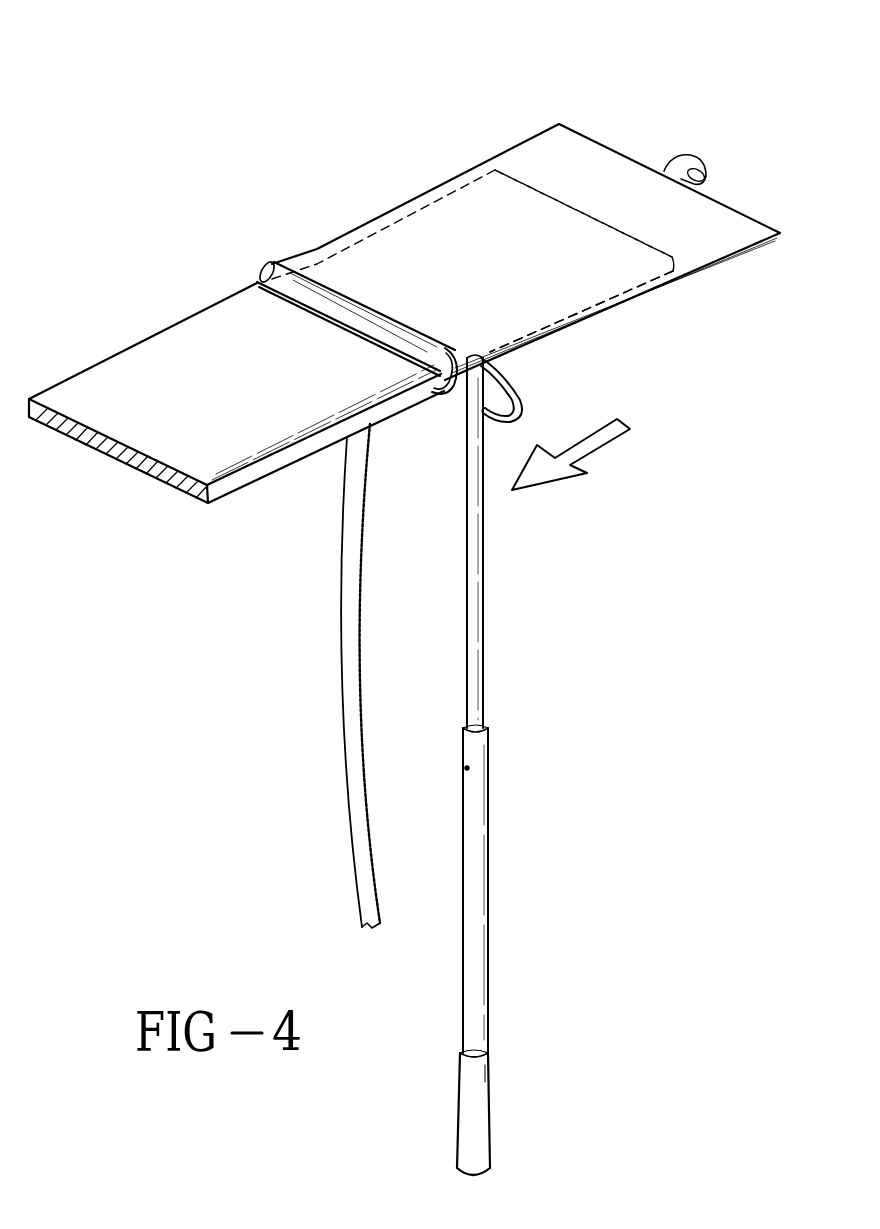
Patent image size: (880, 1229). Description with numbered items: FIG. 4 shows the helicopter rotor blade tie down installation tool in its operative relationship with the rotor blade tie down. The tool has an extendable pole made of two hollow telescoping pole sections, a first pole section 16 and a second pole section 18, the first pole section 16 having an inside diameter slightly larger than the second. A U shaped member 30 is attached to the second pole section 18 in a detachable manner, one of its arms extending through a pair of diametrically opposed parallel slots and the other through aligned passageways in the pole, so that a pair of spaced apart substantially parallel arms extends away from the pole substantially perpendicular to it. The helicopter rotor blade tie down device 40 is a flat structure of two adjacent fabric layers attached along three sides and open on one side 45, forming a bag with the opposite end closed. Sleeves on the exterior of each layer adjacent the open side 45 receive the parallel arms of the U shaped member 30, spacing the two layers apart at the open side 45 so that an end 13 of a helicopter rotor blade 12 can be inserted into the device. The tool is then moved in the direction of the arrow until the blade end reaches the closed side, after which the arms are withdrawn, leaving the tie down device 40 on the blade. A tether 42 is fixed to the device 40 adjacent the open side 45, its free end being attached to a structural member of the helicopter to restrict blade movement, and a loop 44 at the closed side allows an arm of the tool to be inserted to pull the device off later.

The helicopter rotor blade 12 is at (112, 378).
The end of helicopter rotor blade 13 is at (542, 197).
The first pole section 16 is at (487, 870).
The second pole section 18 is at (483, 590).
The U shaped member 30 is at (518, 402).
The helicopter rotor blade tie down device 40 is at (425, 177).
The tether 42 is at (337, 622).
The loop 44 is at (692, 157).
The open side 45 is at (248, 285).